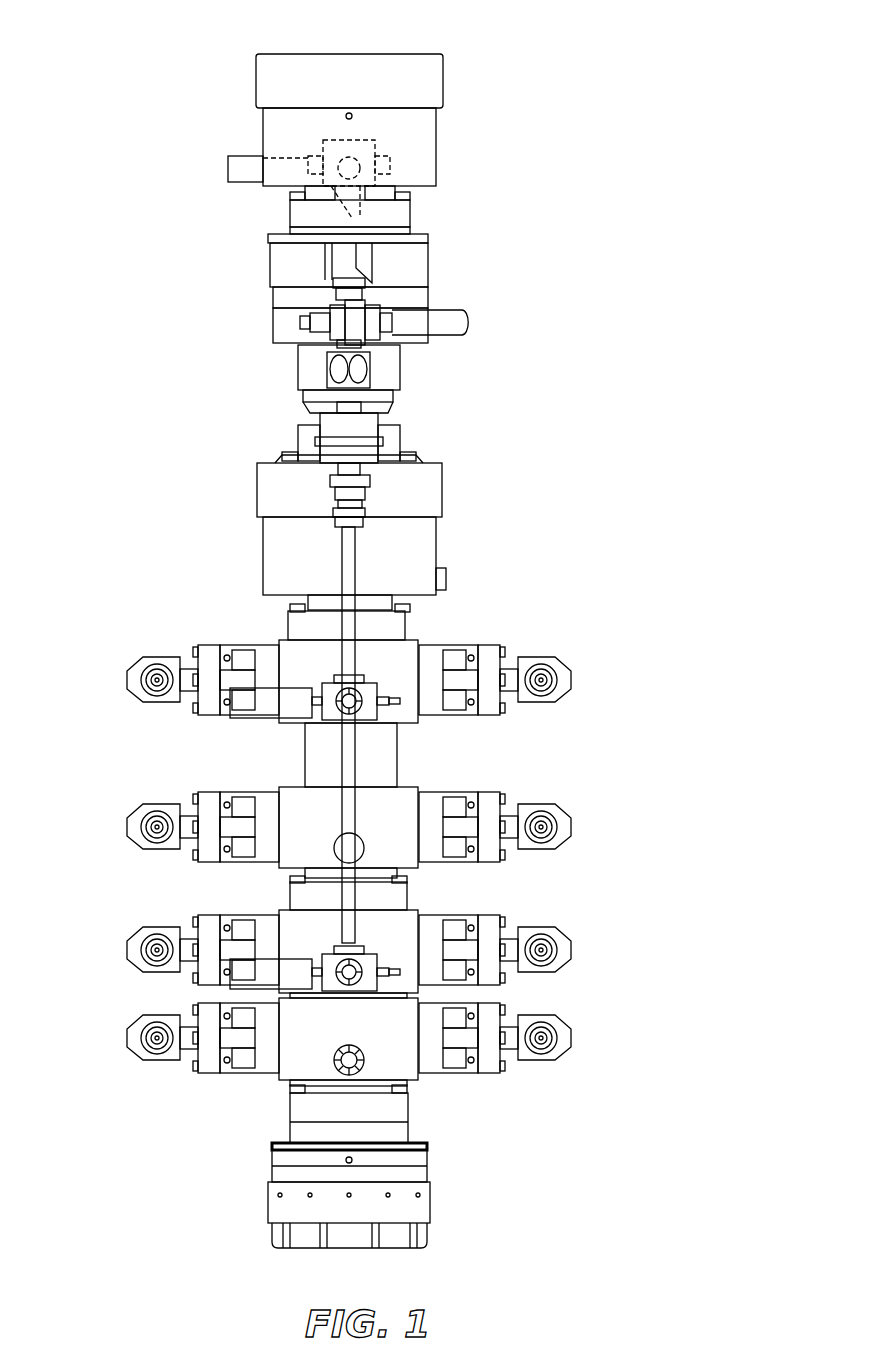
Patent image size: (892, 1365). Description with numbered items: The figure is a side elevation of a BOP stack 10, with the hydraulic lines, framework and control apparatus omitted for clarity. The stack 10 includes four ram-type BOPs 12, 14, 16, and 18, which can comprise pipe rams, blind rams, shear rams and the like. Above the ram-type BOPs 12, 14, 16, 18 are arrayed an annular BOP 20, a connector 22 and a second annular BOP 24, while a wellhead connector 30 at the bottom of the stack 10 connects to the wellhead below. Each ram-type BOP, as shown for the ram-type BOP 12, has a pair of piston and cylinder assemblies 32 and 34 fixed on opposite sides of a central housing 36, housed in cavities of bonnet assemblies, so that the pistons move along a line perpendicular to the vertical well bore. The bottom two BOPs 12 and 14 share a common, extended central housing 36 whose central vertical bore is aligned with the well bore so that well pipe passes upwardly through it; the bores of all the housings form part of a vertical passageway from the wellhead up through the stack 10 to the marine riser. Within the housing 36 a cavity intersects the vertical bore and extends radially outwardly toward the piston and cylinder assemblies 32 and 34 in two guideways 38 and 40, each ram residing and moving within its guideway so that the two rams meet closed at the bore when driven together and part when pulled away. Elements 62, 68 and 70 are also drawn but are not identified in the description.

The BOP stack 10 is at (126, 44).
The ram-type BOP 12 is at (350, 1075).
The ram-type BOP 14 is at (432, 912).
The ram-type BOP 16 is at (432, 790).
The ram-type BOP 18 is at (349, 698).
The annular BOP 20 is at (418, 550).
The connector 22 is at (420, 258).
The second annular BOP 24 is at (418, 150).
The wellhead connector 30 is at (280, 1207).
The piston and cylinder assembly 32 is at (192, 1055).
The piston and cylinder assembly 34 is at (508, 1057).
The central housing 36 is at (320, 998).
The guideway 38 is at (285, 1082).
The guideway 40 is at (410, 1087).
The side outlet 62 is at (348, 1070).
The drill pipe 68 is at (340, 572).
The valve 70 is at (243, 705).